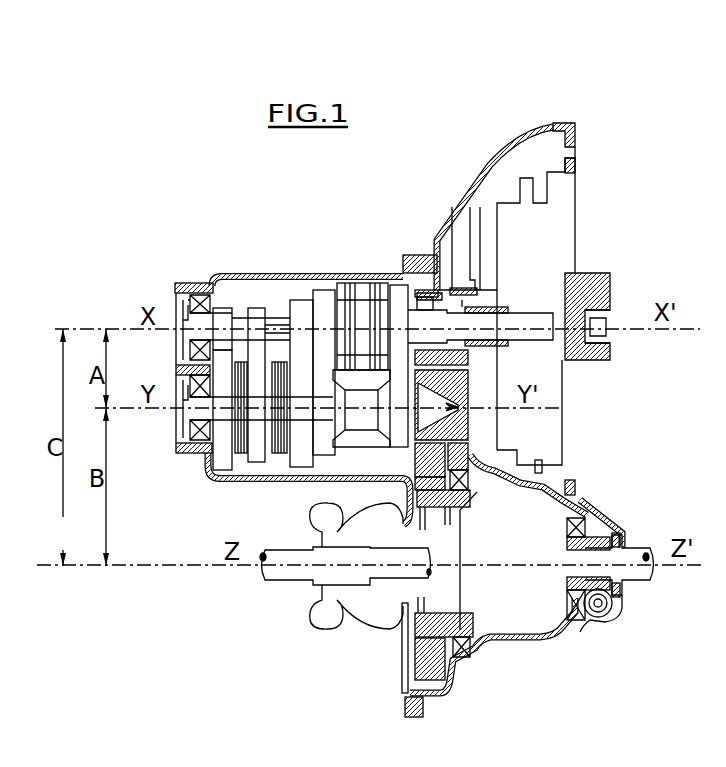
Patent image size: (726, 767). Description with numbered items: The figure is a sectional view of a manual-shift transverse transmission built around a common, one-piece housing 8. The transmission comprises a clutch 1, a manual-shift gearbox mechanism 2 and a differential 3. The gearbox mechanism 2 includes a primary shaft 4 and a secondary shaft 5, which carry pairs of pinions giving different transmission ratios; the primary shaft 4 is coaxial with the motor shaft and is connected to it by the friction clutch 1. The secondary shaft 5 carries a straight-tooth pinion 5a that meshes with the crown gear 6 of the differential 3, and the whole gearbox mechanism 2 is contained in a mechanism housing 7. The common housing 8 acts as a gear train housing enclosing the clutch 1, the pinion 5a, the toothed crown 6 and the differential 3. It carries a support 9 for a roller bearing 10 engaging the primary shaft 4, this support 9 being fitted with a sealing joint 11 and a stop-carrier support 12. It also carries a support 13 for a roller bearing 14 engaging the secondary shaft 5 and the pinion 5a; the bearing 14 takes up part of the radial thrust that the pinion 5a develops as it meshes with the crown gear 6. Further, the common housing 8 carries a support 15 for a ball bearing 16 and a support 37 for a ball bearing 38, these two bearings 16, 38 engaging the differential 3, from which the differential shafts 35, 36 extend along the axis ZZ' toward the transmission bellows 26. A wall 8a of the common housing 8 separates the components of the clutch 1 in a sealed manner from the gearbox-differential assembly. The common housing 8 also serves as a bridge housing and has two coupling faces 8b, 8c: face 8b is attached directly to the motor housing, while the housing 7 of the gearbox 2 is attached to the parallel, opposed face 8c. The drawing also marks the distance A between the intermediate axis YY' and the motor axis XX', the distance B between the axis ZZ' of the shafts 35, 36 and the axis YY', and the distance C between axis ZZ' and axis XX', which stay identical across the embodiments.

The clutch 1 is at (548, 230).
The manual-shift gearbox mechanism 2 is at (270, 298).
The differential 3 is at (530, 600).
The primary shaft 4 is at (540, 313).
The secondary shaft 5 is at (359, 415).
The straight-tooth pinion 5a is at (525, 412).
The crown gear 6 is at (420, 667).
The mechanism housing 7 is at (249, 273).
The common housing 8 is at (492, 175).
The wall 8a is at (573, 483).
The coupling face 8b is at (576, 136).
The coupling face 8c is at (403, 262).
The support 9 is at (422, 253).
The roller bearing 10 is at (428, 297).
The sealing joint 11 is at (460, 285).
The stop-carrier support 12 is at (500, 307).
The support 13 is at (560, 470).
The roller bearing 14 is at (540, 438).
The support 15 is at (472, 658).
The ball bearing 16 is at (462, 660).
The transmission bellows 26 is at (318, 625).
The differential shaft 35 is at (275, 572).
The differential shaft 36 is at (636, 572).
The support 37 is at (583, 503).
The ball bearing 38 is at (580, 616).